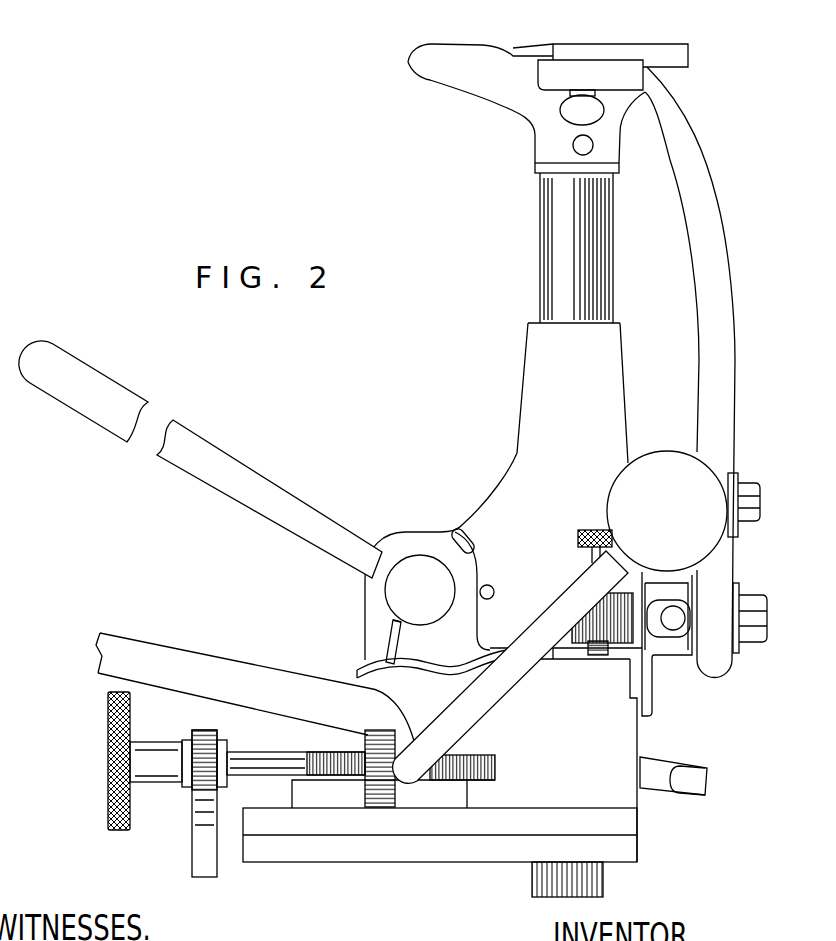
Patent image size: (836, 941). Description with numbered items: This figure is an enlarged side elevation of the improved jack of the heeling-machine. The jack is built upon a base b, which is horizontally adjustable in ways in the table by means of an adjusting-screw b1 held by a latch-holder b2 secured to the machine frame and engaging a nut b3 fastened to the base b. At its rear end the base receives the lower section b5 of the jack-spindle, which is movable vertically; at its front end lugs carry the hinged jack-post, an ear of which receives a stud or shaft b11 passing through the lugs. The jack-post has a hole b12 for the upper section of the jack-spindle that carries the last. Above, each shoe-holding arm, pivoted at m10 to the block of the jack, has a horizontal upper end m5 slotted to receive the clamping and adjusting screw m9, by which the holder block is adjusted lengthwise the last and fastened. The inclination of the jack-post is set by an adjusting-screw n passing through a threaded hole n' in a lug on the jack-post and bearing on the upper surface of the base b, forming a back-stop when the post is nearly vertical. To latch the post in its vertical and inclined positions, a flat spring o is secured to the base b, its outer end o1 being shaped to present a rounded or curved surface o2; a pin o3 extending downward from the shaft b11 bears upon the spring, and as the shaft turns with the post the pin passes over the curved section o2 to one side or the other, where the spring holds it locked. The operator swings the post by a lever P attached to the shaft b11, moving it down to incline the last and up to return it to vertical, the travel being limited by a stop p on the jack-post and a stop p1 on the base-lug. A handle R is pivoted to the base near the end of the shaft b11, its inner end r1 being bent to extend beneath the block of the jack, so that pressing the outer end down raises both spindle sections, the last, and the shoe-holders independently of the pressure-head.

The upper end of holding-arm m5 is at (590, 75).
The clamping and adjusting screw m9 is at (582, 107).
The hole in jack-post b12 is at (583, 145).
The lever P is at (200, 459).
The stop on base-lug p1 is at (463, 537).
The stud or shaft b11 is at (420, 590).
The stop on jack-post p is at (491, 587).
The pin o3 is at (395, 630).
The rounded or curved surface of spring o2 is at (393, 662).
The outer end of spring o1 is at (397, 667).
The handle R is at (232, 684).
The latch-holder b2 is at (203, 782).
The adjusting-screw b1 is at (290, 758).
The nut b3 is at (383, 748).
The base b is at (440, 760).
The flat spring o is at (565, 657).
The threaded hole n' is at (592, 677).
The adjusting-screw n is at (584, 551).
The pivot of holding-arms m10 is at (740, 652).
The inner end of handle r1 is at (682, 775).
The section of jack-spindle b5 is at (600, 882).